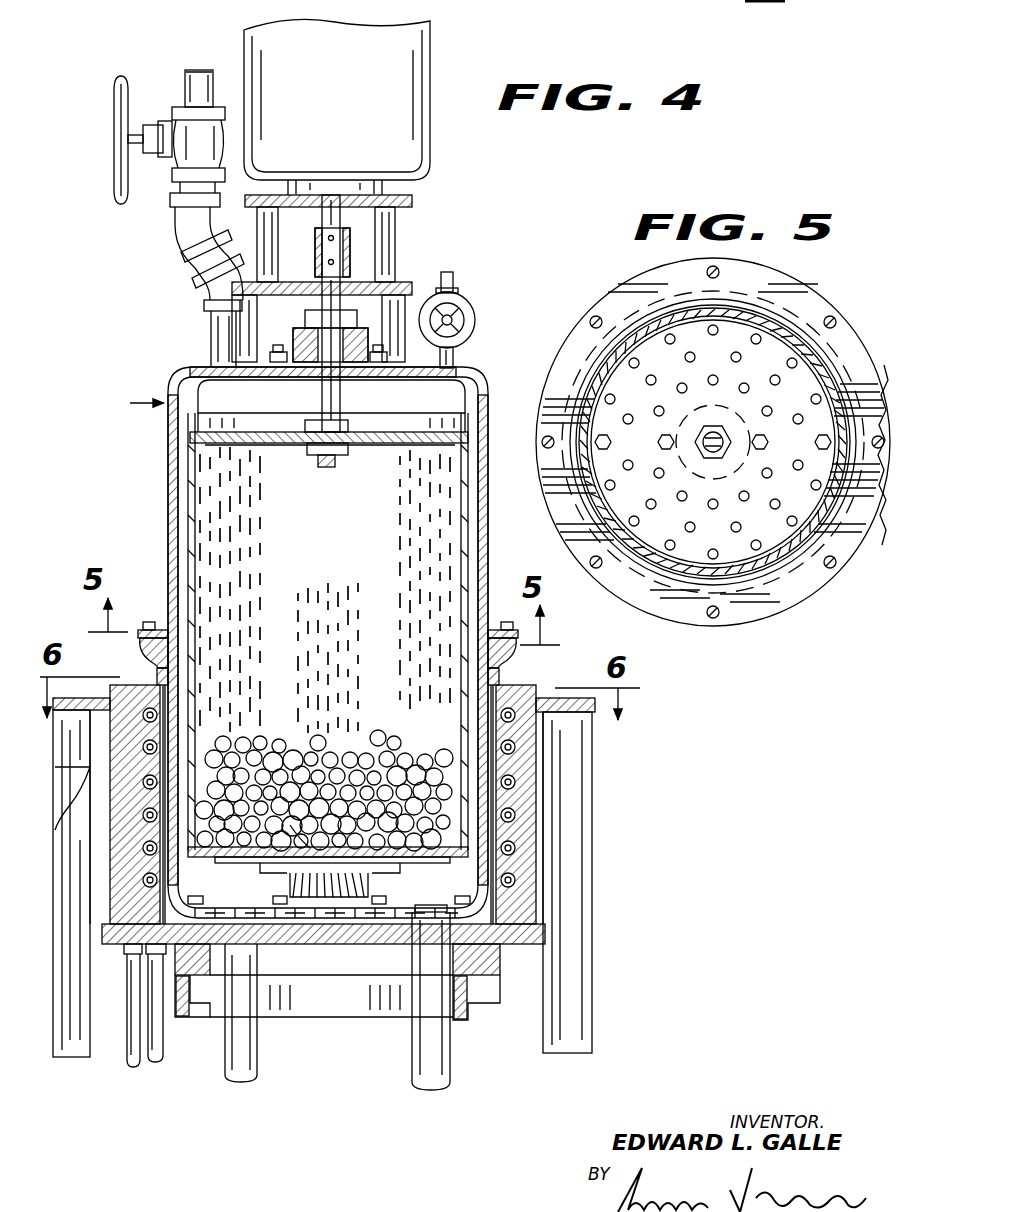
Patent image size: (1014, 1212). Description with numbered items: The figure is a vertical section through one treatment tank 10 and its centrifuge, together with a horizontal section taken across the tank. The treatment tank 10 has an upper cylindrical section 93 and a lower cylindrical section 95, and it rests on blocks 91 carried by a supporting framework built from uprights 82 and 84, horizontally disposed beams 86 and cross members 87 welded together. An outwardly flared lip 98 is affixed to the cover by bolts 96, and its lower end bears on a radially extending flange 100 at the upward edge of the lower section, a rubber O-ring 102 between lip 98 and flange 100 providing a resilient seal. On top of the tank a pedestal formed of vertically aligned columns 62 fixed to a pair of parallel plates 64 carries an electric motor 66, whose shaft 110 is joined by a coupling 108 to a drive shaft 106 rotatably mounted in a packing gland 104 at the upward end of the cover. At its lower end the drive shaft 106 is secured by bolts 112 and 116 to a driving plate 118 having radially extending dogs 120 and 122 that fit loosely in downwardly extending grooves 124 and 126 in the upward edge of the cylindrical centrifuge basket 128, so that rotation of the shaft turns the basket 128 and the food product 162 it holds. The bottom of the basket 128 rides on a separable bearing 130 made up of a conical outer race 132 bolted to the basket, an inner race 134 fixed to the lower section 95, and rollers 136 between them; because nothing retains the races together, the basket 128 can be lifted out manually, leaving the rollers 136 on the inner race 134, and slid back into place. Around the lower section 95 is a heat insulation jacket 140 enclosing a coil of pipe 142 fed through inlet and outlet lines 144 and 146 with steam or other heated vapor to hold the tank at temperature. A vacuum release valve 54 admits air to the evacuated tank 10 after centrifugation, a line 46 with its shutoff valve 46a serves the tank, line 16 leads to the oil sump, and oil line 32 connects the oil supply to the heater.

In FIG. 4, the treatment tank 10 is at (131, 403).
In FIG. 4, the line 16 is at (257, 1055).
In FIG. 4, the oil line 32 is at (450, 1060).
In FIG. 4, the line 46 is at (178, 240).
In FIG. 4, the shutoff valve 46a is at (114, 150).
In FIG. 4, the vacuum release valve 54 is at (470, 312).
In FIG. 4, the columns 62 is at (396, 228).
In FIG. 4, the plates 64 is at (413, 200).
In FIG. 4, the electric motor 66 is at (432, 152).
In FIG. 4, the uprights 82 is at (592, 922).
In FIG. 4, the uprights 84 is at (80, 790).
In FIG. 4, the beams 86 is at (190, 1005).
In FIG. 4, the cross members 87 is at (305, 1010).
In FIG. 4, the blocks 91 is at (210, 960).
In FIG. 4, the upper cylindrical section 93 is at (168, 535).
In FIG. 4, the lower cylindrical section 95 is at (536, 808).
In FIG. 4, the bolts 96 is at (150, 622).
In FIG. 4, the outwardly flared lip 98 is at (178, 640).
In FIG. 4, the flange 100 is at (157, 676).
In FIG. 5, the flange 100 is at (713, 425).
In FIG. 4, the rubber O-ring 102 is at (160, 664).
In FIG. 4, the packing gland 104 is at (296, 330).
In FIG. 4, the drive shaft 106 is at (322, 398).
In FIG. 4, the coupling 108 is at (350, 252).
In FIG. 4, the motor shaft 110 is at (322, 222).
In FIG. 4, the bolt 112 is at (343, 422).
In FIG. 4, the bolt 116 is at (345, 455).
In FIG. 5, the bolt 116 is at (731, 442).
In FIG. 4, the driving plate 118 is at (280, 445).
In FIG. 5, the driving plate 118 is at (646, 431).
In FIG. 5, the dog 120 is at (588, 456).
In FIG. 4, the dog 122 is at (190, 437).
In FIG. 5, the dog 122 is at (878, 454).
In FIG. 4, the groove 124 is at (190, 372).
In FIG. 4, the groove 126 is at (465, 420).
In FIG. 4, the centrifuge basket 128 is at (188, 488).
In FIG. 5, the centrifuge basket 128 is at (640, 324).
In FIG. 4, the separable bearing 130 is at (272, 884).
In FIG. 4, the conical outer race 132 is at (395, 845).
In FIG. 4, the inner race 134 is at (282, 823).
In FIG. 4, the rollers 136 is at (370, 885).
In FIG. 4, the heat insulation jacket 140 is at (536, 870).
In FIG. 4, the coil of pipe 142 is at (515, 782).
In FIG. 4, the inlet line 144 is at (127, 1058).
In FIG. 4, the outlet line 146 is at (163, 1050).
In FIG. 4, the food product 162 is at (380, 745).